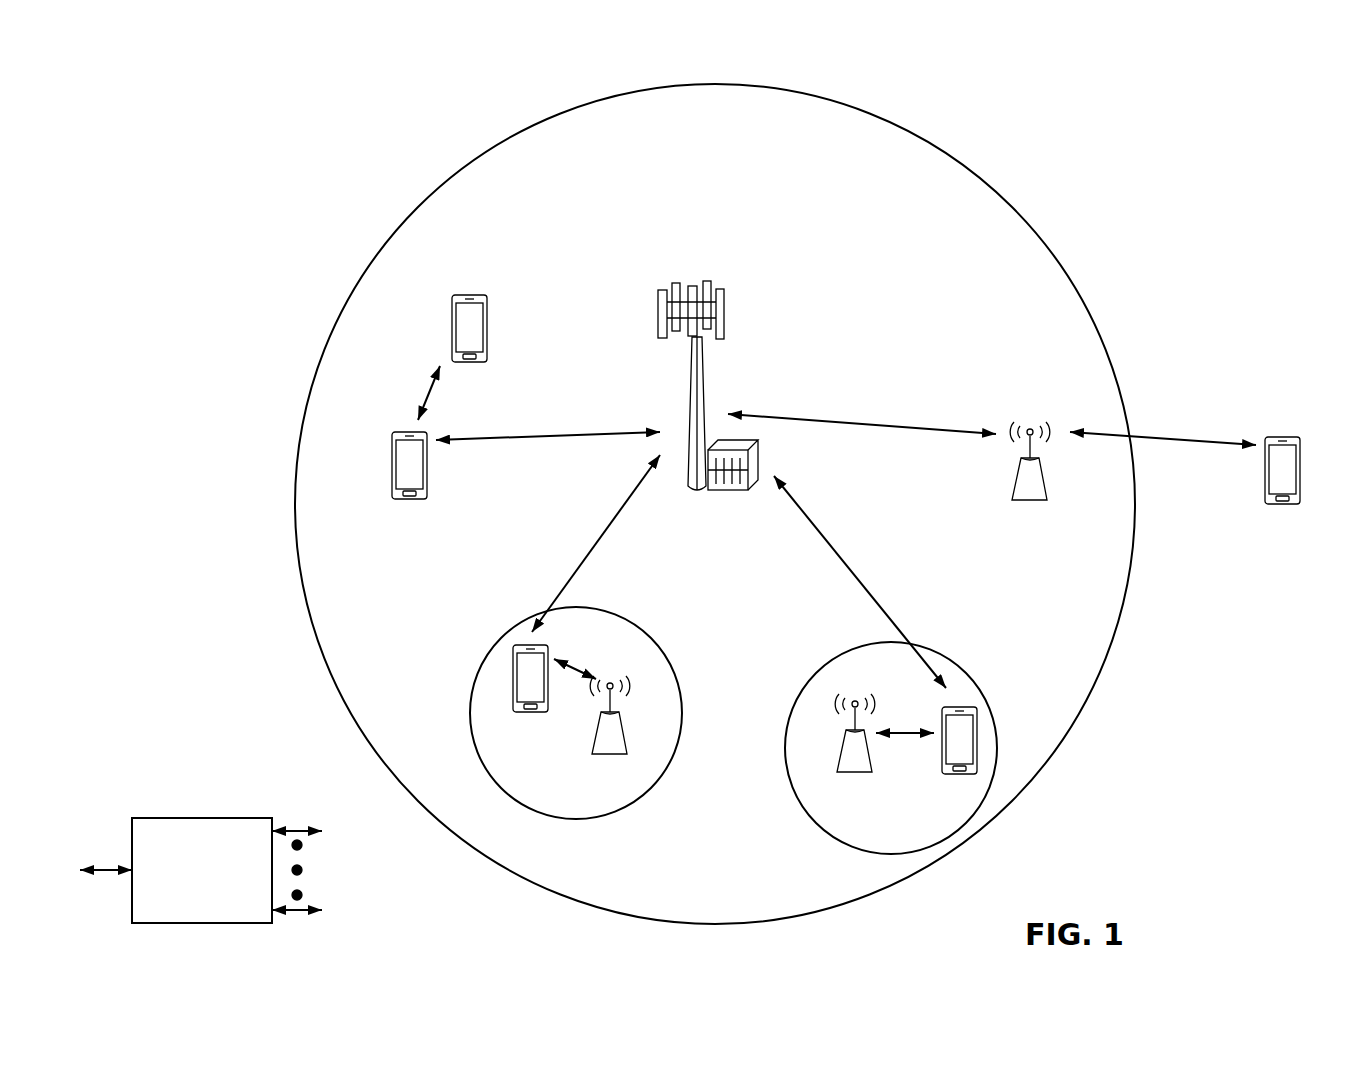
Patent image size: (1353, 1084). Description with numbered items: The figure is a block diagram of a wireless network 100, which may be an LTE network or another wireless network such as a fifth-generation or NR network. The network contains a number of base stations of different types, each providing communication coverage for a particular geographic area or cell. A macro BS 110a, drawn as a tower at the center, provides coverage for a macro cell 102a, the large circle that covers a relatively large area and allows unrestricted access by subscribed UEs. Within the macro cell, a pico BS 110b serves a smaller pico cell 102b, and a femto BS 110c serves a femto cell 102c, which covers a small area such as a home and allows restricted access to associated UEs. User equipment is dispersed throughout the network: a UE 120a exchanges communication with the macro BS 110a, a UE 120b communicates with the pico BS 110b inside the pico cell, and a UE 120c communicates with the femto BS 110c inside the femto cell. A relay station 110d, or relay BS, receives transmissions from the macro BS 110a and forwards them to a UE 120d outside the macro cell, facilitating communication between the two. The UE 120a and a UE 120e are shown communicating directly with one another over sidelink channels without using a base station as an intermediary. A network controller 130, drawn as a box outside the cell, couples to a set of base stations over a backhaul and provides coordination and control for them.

The wireless network 100 is at (188, 80).
The macro cell 102a is at (1000, 195).
The pico cell 102b is at (668, 650).
The femto cell 102c is at (828, 658).
The macro BS 110a is at (702, 285).
The pico BS 110b is at (628, 744).
The femto BS 110c is at (838, 762).
The relay station 110d is at (1032, 426).
The UE 120a is at (392, 462).
The UE 120b is at (516, 712).
The UE 120c is at (944, 776).
The UE 120d is at (1290, 436).
The UE 120e is at (451, 318).
The network controller 130 is at (200, 818).